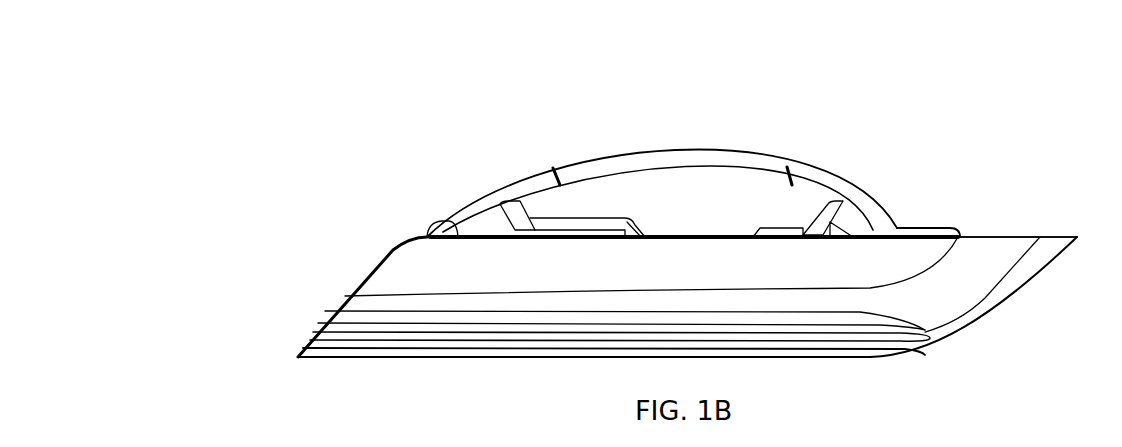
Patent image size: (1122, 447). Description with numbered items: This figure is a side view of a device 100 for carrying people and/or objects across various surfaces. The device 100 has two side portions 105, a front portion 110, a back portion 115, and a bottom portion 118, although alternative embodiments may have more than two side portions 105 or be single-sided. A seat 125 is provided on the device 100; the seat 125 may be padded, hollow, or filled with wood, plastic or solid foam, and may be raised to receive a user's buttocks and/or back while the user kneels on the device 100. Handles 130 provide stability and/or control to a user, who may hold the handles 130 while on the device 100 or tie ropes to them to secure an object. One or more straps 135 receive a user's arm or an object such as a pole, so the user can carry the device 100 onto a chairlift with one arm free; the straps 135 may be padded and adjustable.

The device 100 is at (305, 130).
The side portions 105 is at (462, 273).
The front portion 110 is at (1005, 225).
The back portion 115 is at (343, 300).
The bottom portion 118 is at (840, 360).
The seat 125 is at (585, 214).
The handles 130 is at (652, 147).
The straps 135 is at (912, 222).